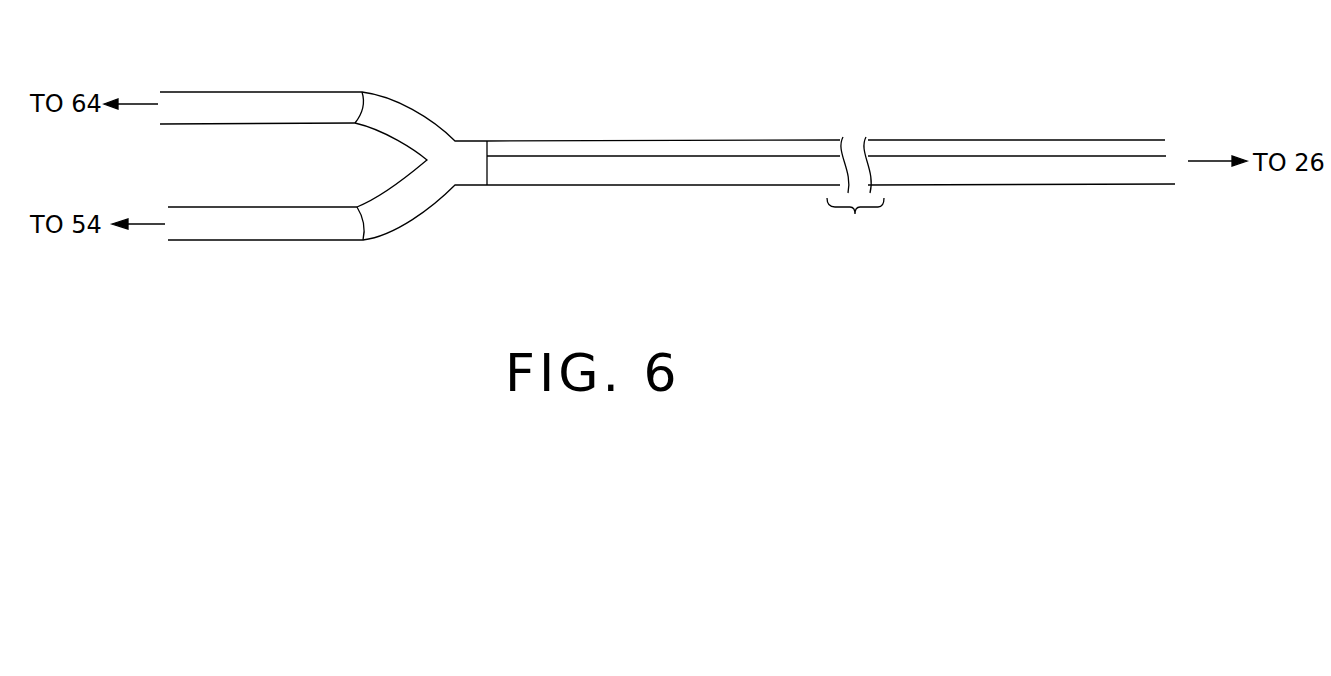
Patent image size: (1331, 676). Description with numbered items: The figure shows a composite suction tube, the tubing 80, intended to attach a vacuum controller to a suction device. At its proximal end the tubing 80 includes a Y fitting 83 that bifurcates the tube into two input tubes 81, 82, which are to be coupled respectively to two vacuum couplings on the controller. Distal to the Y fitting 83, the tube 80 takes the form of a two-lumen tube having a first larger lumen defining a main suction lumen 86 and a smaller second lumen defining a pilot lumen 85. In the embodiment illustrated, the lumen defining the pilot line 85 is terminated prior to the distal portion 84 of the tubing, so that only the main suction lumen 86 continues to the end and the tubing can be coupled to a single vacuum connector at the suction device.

The tubing 80 is at (948, 110).
The input tube 81 is at (228, 90).
The input tube 82 is at (222, 242).
The Y fitting 83 is at (410, 110).
The distal portion 84 is at (1148, 140).
The pilot lumen 85 is at (655, 148).
The main suction lumen 86 is at (618, 173).